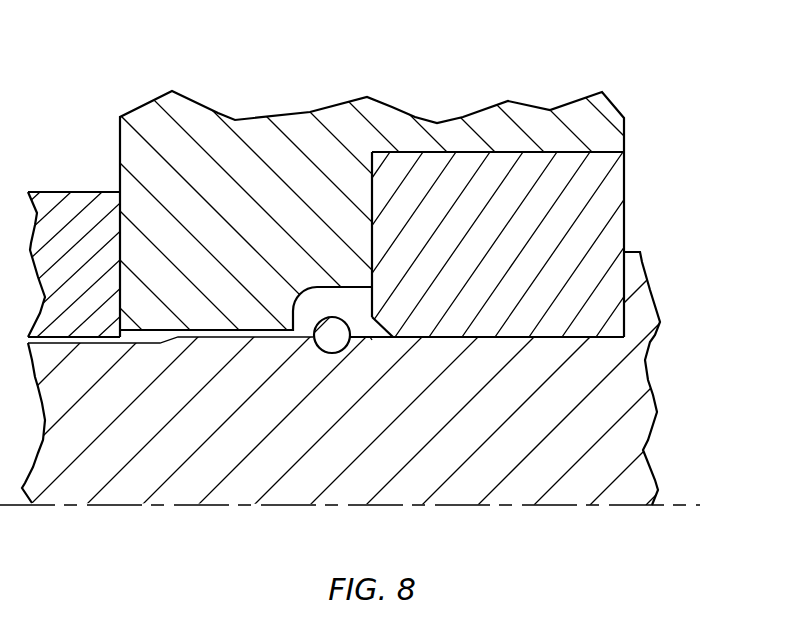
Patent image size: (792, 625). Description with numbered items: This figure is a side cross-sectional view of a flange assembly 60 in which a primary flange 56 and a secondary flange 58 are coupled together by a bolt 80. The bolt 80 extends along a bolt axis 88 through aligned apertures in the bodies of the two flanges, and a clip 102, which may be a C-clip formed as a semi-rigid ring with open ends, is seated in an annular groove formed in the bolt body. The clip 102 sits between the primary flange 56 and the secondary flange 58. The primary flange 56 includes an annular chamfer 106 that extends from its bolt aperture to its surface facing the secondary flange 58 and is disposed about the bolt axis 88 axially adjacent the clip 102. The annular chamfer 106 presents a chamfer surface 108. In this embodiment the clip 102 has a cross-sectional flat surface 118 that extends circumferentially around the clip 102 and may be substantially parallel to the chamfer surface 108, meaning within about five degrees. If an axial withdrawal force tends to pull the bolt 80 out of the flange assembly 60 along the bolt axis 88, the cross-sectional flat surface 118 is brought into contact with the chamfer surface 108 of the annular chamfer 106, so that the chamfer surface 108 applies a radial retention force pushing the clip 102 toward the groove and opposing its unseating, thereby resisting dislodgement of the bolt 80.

The primary flange 56 is at (493, 244).
The secondary flange 58 is at (396, 194).
The flange assembly 60 is at (396, 194).
The bolt 80 is at (658, 386).
The bolt axis 88 is at (695, 505).
The clip 102 is at (310, 352).
The annular chamfer 106 is at (390, 316).
The chamfer surface 108 is at (373, 337).
The cross-sectional flat surface 118 is at (350, 322).